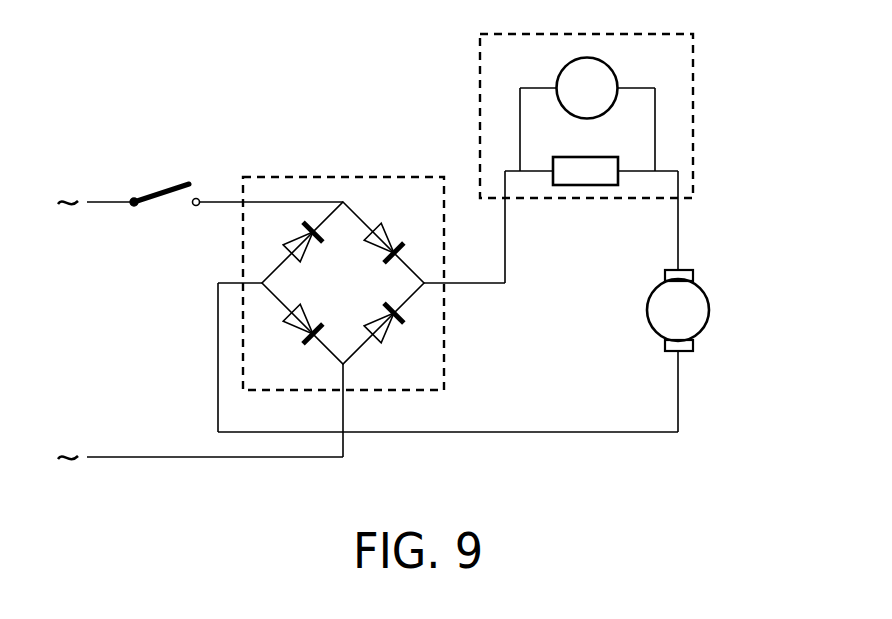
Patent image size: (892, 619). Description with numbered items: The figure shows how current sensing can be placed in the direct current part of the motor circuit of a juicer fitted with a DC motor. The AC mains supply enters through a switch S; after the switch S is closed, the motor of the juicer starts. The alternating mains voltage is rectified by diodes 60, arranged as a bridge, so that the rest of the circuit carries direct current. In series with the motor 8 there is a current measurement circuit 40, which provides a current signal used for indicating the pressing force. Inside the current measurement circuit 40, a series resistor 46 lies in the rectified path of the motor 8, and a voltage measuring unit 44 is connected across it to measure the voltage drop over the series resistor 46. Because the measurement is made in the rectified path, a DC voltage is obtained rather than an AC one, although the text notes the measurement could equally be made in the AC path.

The switch S is at (236, 182).
The diodes 60 is at (338, 177).
The current measurement circuit 40 is at (626, 147).
The voltage measuring unit 44 is at (612, 62).
The series resistor 46 is at (578, 186).
The motor 8 is at (709, 312).